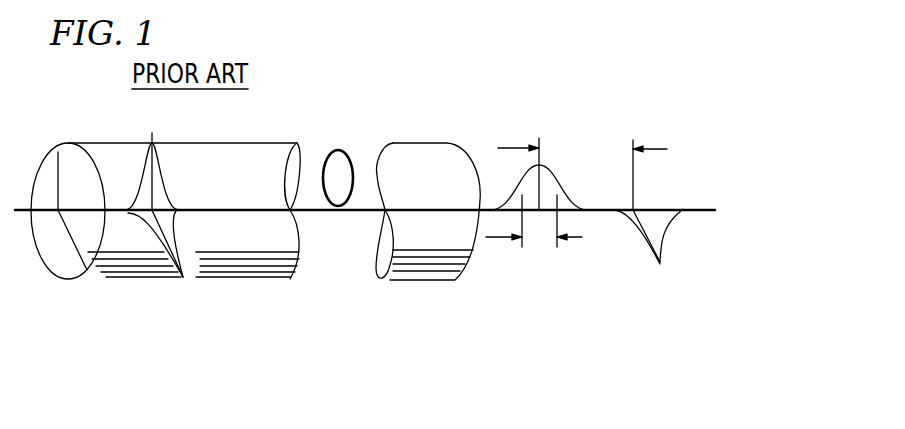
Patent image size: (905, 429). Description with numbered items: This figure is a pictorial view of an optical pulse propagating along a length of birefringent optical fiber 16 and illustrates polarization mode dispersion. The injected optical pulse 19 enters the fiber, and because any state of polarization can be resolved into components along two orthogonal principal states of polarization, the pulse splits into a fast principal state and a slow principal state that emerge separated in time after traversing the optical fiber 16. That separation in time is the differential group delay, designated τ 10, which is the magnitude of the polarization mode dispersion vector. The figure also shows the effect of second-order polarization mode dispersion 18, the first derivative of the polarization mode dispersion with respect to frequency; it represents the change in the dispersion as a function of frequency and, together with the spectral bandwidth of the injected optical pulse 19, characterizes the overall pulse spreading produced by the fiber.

The differential group delay (DGD) τ 10 is at (690, 150).
The optical fiber 16 is at (341, 150).
The second-order polarization mode dispersion (SOPMD) 18 is at (600, 252).
The injected optical pulse 19 is at (176, 212).